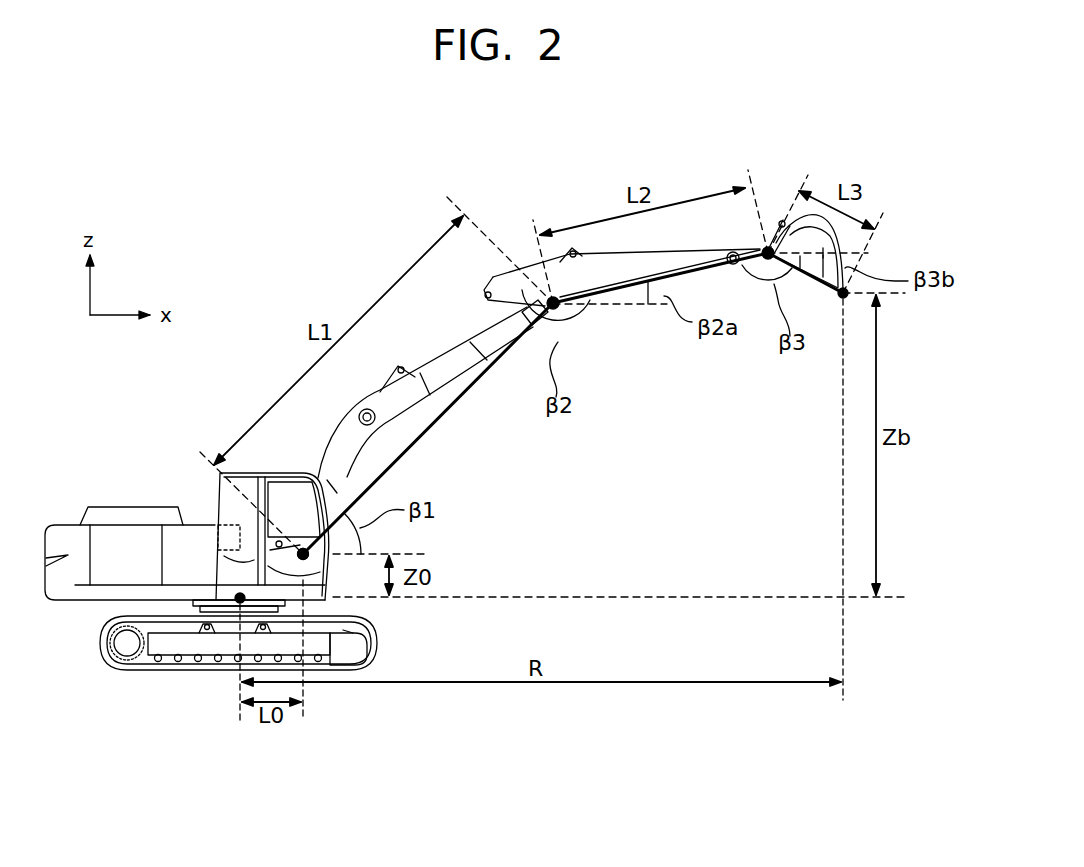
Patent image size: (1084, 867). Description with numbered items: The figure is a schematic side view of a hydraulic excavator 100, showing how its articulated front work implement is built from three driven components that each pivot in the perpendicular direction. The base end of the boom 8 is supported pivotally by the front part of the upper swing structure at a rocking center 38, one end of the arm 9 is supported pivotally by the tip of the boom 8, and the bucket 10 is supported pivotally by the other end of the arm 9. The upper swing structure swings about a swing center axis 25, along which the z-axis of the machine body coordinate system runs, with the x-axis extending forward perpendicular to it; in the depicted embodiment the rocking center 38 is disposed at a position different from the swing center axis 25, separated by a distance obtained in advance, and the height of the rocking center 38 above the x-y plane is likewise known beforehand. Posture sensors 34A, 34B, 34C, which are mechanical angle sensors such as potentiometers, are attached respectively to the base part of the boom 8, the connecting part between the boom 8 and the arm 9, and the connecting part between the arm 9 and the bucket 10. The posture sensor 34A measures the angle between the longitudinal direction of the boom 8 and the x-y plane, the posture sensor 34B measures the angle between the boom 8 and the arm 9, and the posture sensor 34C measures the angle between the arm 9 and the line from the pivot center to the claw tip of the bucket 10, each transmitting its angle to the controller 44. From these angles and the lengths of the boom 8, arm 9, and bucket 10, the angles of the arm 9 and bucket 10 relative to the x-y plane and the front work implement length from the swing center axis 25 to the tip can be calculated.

The hydraulic excavator 100 is at (292, 223).
The boom 8 is at (338, 450).
The arm 9 is at (623, 268).
The bucket 10 is at (846, 233).
The swing center axis 25 is at (240, 722).
The posture sensor 34A is at (287, 553).
The posture sensor 34B is at (552, 300).
The posture sensor 34C is at (768, 251).
The rocking center 38 is at (333, 548).
The controller 44 is at (217, 540).